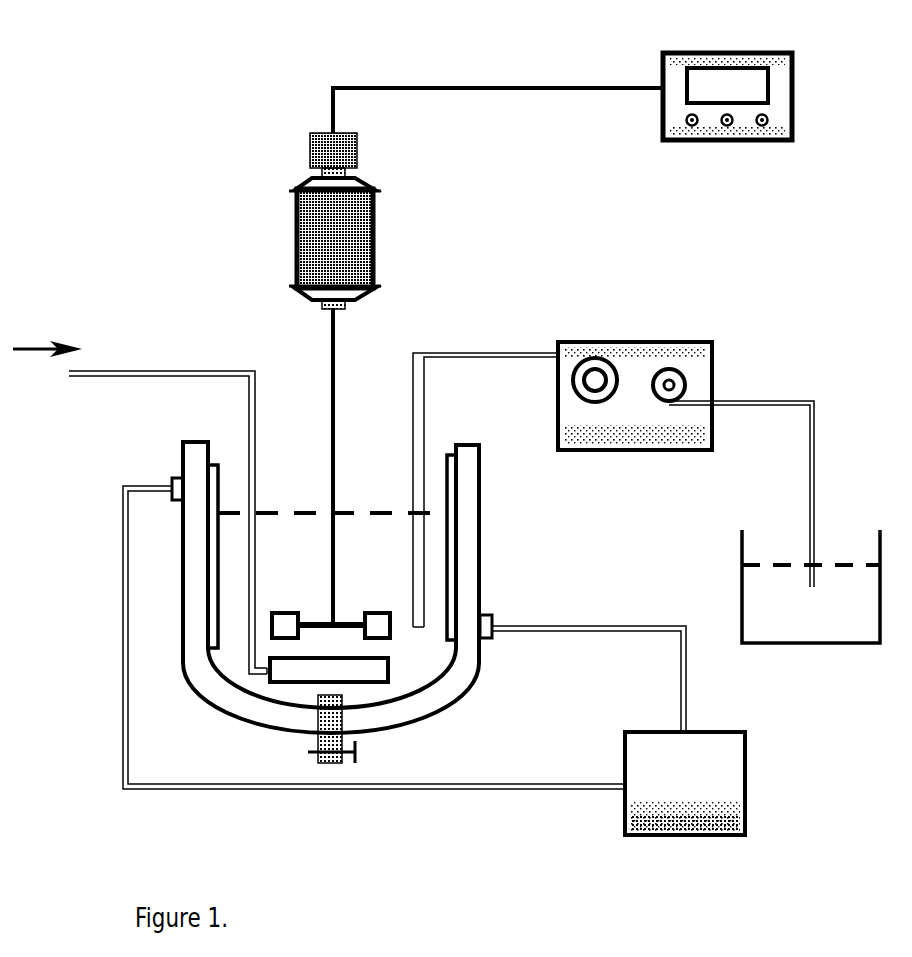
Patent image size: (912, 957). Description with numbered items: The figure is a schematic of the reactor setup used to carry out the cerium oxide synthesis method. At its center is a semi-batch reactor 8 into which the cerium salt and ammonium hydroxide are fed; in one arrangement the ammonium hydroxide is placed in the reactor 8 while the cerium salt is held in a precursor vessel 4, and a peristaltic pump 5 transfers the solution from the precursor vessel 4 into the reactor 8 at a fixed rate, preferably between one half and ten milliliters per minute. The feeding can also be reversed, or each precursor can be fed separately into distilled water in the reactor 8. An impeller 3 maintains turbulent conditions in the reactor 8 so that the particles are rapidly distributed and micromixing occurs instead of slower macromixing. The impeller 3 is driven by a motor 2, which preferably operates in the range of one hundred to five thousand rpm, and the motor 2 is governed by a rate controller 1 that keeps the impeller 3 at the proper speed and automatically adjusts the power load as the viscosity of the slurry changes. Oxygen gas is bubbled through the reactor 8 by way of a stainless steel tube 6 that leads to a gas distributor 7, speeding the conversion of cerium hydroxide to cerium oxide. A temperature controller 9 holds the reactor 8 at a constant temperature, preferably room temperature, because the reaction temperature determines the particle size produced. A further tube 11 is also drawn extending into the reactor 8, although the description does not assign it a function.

The rate controller 1 is at (562, 74).
The motor 2 is at (344, 221).
The impeller 3 is at (331, 473).
The precursor vessel 4 is at (811, 586).
The peristaltic pump 5 is at (686, 443).
The stainless steel tube 6 is at (140, 501).
The gas distributor 7 is at (339, 666).
The semi-batch reactor 8 is at (342, 602).
The temperature controller 9 is at (453, 660).
The sampling tube 11 is at (468, 490).